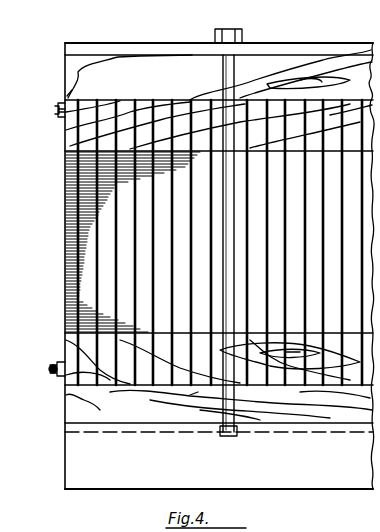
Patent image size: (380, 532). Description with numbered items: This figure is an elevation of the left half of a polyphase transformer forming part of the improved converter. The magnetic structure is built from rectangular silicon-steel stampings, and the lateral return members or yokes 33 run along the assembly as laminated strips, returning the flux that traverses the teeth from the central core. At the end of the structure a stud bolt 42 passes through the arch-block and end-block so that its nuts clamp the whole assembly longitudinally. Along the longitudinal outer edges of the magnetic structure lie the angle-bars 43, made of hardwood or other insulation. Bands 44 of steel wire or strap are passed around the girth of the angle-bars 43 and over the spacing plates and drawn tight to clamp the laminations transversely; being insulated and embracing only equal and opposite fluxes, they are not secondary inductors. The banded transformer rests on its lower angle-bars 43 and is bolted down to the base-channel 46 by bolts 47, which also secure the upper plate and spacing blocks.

The lateral return member or yoke 33 is at (68, 210).
The stud bolt 42 is at (55, 109).
The angle-bar 43 is at (67, 133).
The band 44 is at (78, 250).
The base-channel 46 is at (67, 457).
The bolt 47 is at (232, 28).